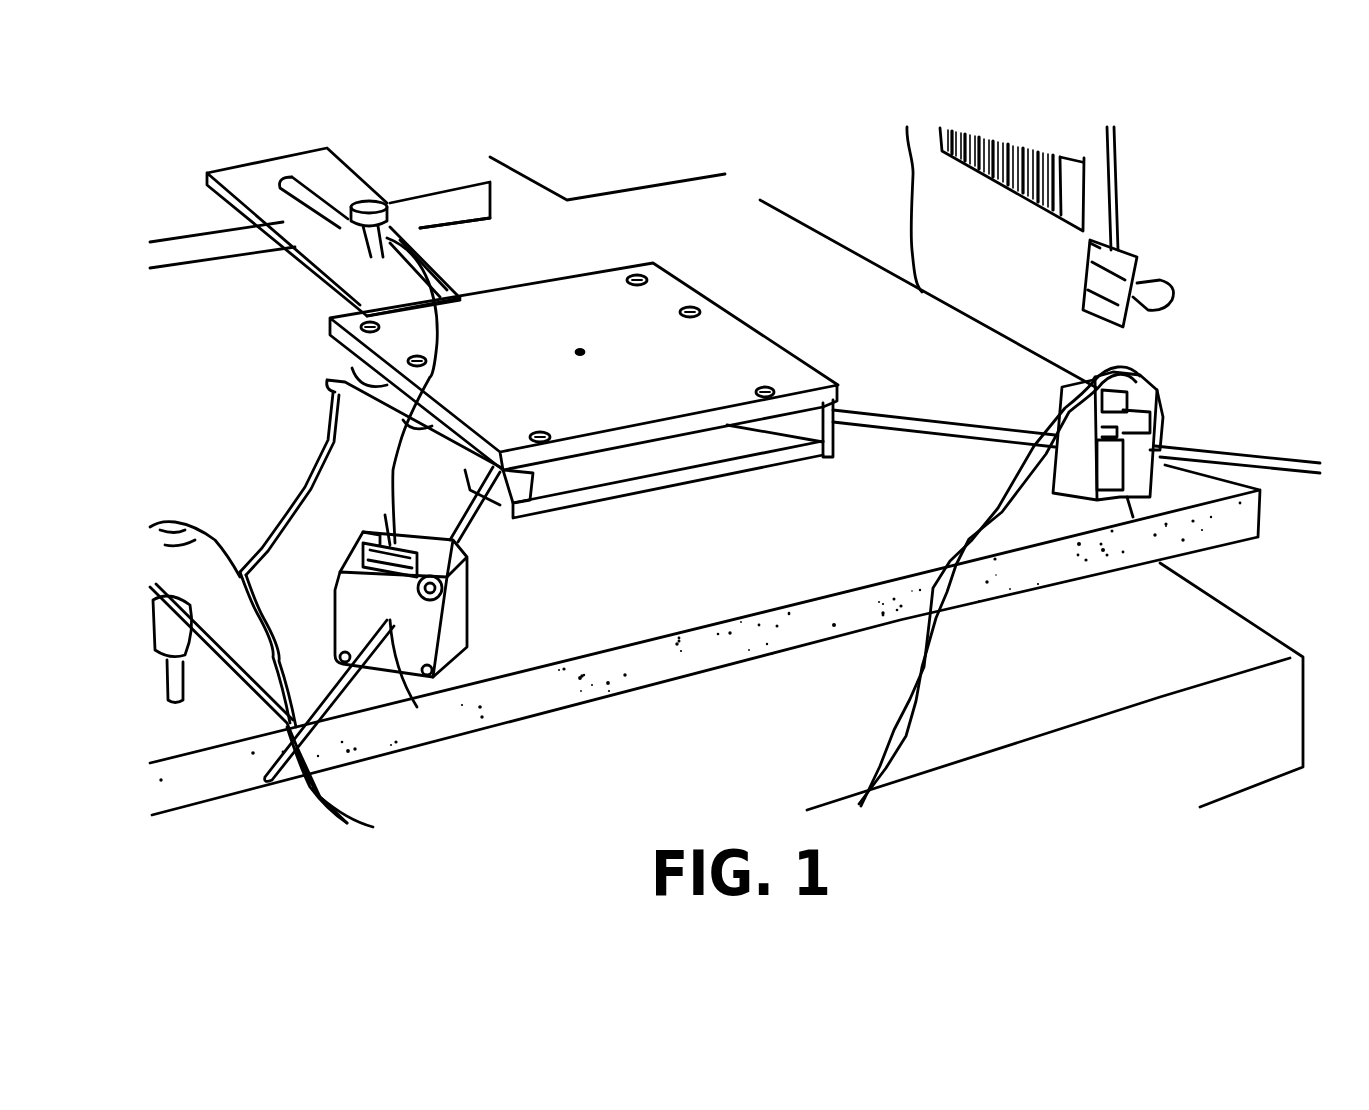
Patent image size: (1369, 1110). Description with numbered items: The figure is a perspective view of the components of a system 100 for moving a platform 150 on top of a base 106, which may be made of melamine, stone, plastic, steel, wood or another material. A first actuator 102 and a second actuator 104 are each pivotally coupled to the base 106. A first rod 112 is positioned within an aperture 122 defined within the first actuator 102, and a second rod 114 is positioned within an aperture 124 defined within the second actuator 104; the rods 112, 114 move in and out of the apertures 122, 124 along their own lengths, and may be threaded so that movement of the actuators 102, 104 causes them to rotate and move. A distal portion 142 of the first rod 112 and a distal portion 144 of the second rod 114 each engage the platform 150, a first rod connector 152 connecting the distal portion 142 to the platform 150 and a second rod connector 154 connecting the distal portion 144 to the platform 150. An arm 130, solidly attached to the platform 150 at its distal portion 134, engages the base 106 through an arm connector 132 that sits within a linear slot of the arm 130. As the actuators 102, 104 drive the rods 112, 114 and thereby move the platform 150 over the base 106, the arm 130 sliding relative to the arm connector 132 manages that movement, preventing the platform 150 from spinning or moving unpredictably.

The system 100 is at (657, 230).
The first actuator 102 is at (467, 610).
The second actuator 104 is at (1133, 517).
The base 106 is at (853, 542).
The first rod 112 is at (313, 713).
The second rod 114 is at (985, 420).
The aperture 122 is at (372, 677).
The aperture 124 is at (1178, 444).
The arm 130 is at (450, 270).
The arm connector 132 is at (372, 203).
The distal portion 134 is at (355, 307).
The distal portion 142 is at (503, 473).
The distal portion 144 is at (833, 440).
The platform 150 is at (680, 374).
The first rod connector 152 is at (415, 492).
The second rod connector 154 is at (799, 415).